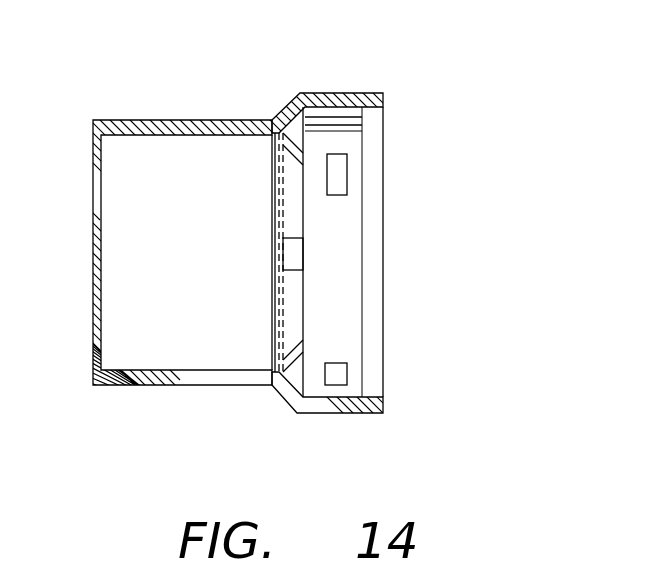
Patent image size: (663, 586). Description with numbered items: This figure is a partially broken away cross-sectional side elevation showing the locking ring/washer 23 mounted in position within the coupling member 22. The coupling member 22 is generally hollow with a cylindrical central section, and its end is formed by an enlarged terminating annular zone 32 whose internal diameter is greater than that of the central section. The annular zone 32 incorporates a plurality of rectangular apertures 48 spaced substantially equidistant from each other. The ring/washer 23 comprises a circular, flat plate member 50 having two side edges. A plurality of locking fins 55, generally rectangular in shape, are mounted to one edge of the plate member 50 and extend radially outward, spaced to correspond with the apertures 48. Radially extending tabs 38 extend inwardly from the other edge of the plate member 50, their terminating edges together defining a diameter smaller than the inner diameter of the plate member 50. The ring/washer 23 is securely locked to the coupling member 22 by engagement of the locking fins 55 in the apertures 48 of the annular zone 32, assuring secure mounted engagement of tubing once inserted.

The conduit/tubing coupling member 22 is at (136, 340).
The ring/washer 23 is at (325, 130).
The annular zone 32 is at (322, 122).
The radially extending tab 38 is at (272, 160).
The aperture 48 is at (348, 372).
The plate member 50 is at (315, 102).
The locking fin 55 is at (342, 102).